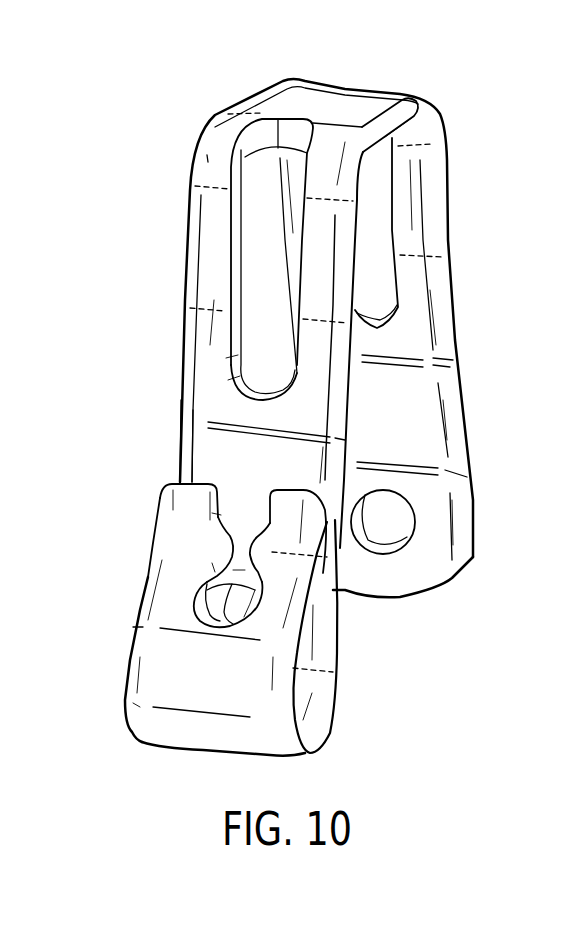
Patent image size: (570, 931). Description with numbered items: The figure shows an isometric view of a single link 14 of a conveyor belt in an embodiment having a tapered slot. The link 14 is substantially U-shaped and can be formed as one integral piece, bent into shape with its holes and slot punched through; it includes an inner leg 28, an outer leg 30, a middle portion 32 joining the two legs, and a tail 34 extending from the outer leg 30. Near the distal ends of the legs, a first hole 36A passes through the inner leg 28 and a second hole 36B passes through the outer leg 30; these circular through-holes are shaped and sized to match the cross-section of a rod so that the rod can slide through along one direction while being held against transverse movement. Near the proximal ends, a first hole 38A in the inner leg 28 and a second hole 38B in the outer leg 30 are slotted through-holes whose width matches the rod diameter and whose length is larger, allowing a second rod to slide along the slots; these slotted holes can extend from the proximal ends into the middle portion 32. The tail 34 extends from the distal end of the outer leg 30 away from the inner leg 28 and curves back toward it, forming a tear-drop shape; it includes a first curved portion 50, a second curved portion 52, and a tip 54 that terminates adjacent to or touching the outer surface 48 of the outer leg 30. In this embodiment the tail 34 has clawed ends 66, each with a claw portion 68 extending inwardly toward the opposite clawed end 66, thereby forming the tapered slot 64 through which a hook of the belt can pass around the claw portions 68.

The link 14 is at (232, 62).
The inner leg 28 is at (452, 340).
The outer leg 30 is at (208, 228).
The middle portion 32 is at (352, 102).
The tail 34 is at (203, 762).
The first hole 36A is at (393, 510).
The second hole 36B is at (240, 605).
The first hole 38A is at (368, 225).
The second hole 38B is at (255, 290).
The outer surface 48 is at (208, 397).
The first curved portion 50 is at (245, 689).
The second curved portion 52 is at (182, 655).
The tip 54 is at (202, 480).
The tapered slot 64 is at (205, 592).
The clawed ends 66 is at (187, 513).
The claw portion 68 is at (205, 552).